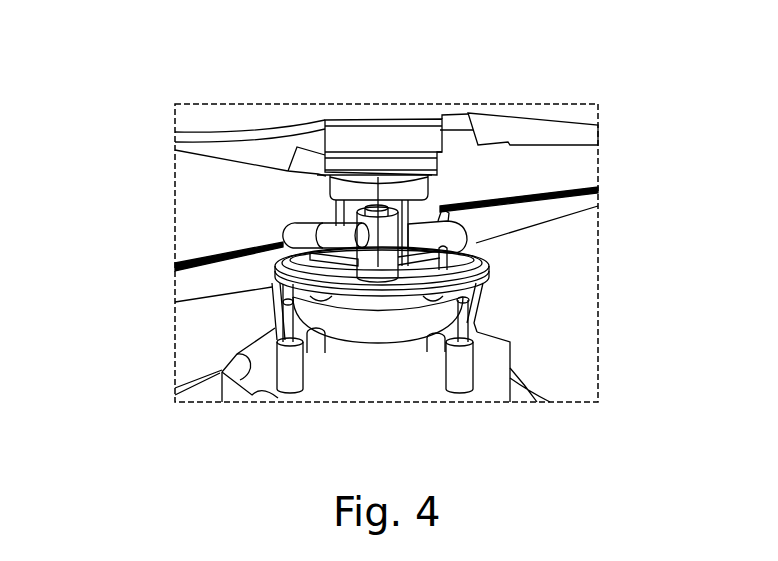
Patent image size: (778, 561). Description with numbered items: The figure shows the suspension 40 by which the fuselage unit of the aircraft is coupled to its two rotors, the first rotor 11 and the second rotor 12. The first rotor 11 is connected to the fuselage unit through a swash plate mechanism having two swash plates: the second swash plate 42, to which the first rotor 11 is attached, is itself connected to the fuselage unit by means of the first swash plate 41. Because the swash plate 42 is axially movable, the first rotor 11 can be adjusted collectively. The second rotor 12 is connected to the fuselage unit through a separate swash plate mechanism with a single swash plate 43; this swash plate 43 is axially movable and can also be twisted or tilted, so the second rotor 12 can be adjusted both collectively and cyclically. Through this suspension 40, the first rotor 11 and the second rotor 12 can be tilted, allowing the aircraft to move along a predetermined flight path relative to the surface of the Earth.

The suspension 40 is at (166, 178).
The first rotor 11 is at (502, 128).
The second rotor 12 is at (592, 194).
The second swash plate 42 is at (310, 183).
The first swash plate 41 is at (498, 263).
The swash plate 43 is at (371, 317).